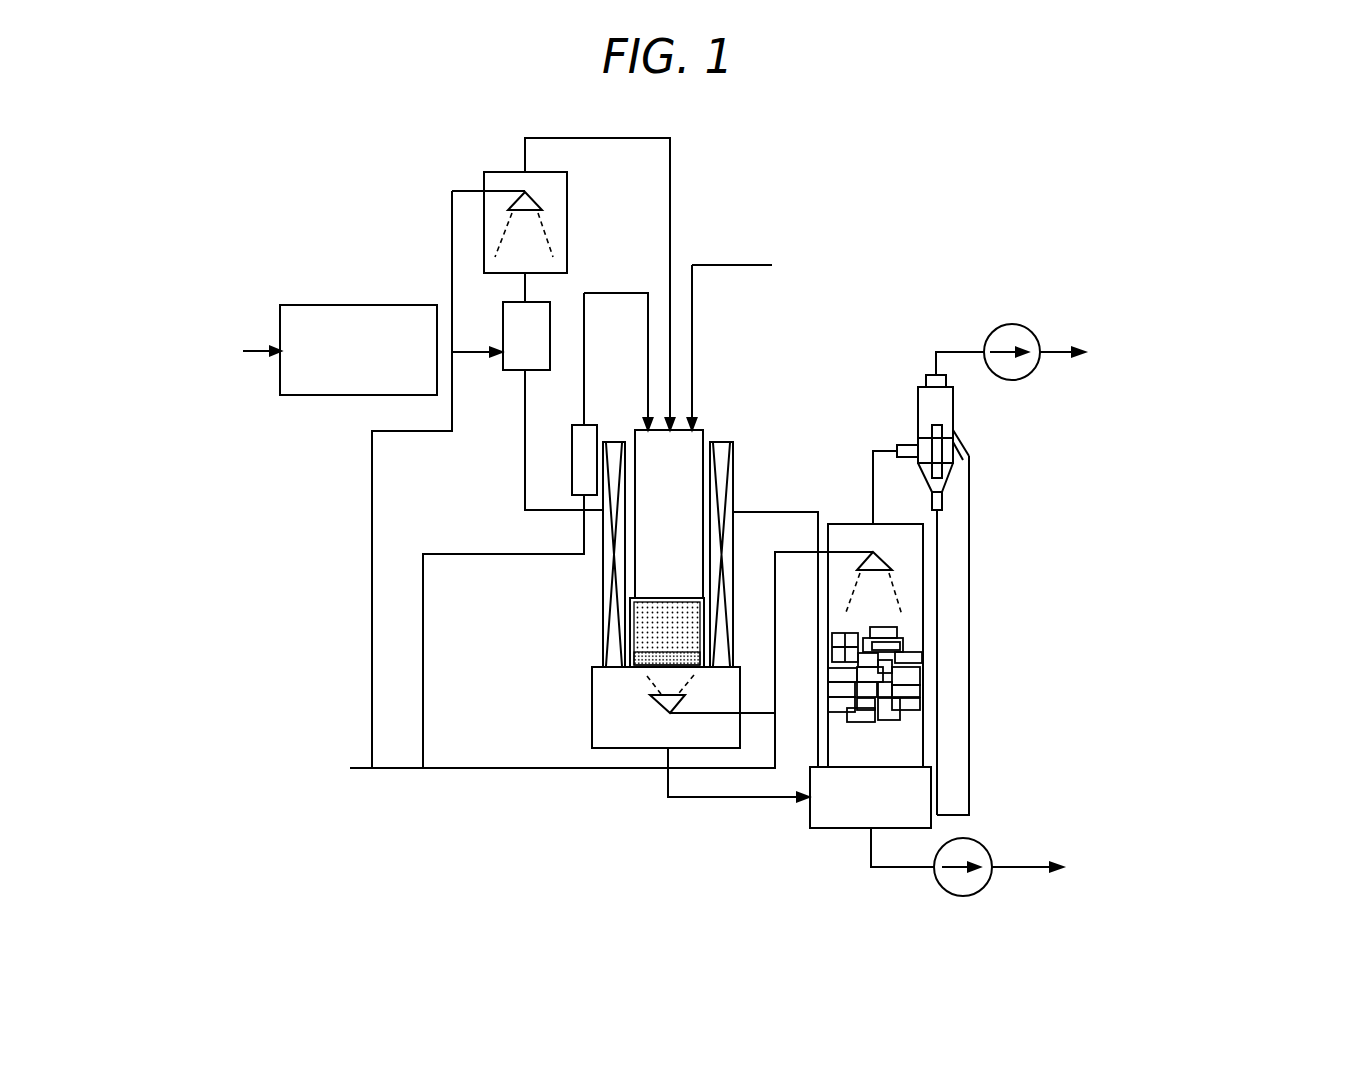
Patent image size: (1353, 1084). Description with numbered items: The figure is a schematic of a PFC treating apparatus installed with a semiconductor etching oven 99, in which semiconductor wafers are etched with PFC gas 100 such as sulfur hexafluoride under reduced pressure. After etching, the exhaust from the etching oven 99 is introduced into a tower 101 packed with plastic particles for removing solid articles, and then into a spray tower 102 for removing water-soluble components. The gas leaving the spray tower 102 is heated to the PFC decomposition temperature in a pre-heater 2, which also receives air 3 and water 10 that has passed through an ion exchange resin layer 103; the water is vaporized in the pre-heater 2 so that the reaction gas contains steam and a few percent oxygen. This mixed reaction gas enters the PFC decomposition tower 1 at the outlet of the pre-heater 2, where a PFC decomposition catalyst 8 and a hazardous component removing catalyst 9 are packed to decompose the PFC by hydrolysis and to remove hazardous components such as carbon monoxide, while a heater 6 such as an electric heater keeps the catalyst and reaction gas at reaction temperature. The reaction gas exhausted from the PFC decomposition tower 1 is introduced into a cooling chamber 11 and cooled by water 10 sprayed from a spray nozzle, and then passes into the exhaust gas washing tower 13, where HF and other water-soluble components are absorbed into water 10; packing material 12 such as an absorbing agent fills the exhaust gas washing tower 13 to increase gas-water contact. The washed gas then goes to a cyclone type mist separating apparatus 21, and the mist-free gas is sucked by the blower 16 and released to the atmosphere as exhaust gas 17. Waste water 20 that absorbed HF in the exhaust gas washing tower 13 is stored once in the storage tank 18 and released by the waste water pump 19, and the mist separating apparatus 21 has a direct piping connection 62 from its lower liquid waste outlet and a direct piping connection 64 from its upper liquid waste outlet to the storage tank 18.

The PFC decomposition tower 1 is at (632, 600).
The pre-heater 2 is at (703, 430).
The air 3 is at (764, 341).
The heater 6 is at (733, 498).
The PFC decomposition catalyst 8 is at (642, 622).
The hazardous component removing catalyst 9 is at (645, 658).
The water 10 is at (542, 669).
The cooling chamber 11 is at (592, 730).
The packing material 12 is at (915, 688).
The exhaust gas washing tower 13 is at (925, 606).
The blower 16 is at (1053, 283).
The exhaust gas 17 is at (1176, 354).
The storage tank 18 is at (822, 830).
The waste water pump 19 is at (963, 897).
The waste water 20 is at (1146, 870).
The cyclone type mist separating apparatus 21 is at (952, 410).
The direct piping connection 62 is at (935, 518).
The direct piping connection 64 is at (970, 558).
The etching oven 99 is at (322, 305).
The PFC gas 100 is at (178, 352).
The tower 101 is at (503, 320).
The spray tower 102 is at (487, 170).
The ion exchange resin layer 103 is at (572, 465).